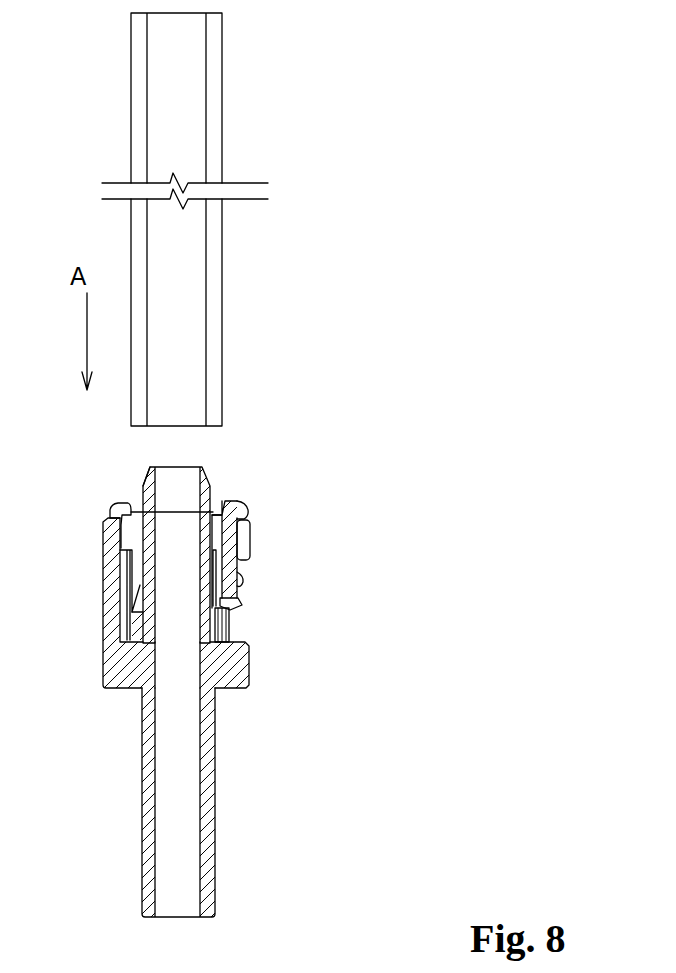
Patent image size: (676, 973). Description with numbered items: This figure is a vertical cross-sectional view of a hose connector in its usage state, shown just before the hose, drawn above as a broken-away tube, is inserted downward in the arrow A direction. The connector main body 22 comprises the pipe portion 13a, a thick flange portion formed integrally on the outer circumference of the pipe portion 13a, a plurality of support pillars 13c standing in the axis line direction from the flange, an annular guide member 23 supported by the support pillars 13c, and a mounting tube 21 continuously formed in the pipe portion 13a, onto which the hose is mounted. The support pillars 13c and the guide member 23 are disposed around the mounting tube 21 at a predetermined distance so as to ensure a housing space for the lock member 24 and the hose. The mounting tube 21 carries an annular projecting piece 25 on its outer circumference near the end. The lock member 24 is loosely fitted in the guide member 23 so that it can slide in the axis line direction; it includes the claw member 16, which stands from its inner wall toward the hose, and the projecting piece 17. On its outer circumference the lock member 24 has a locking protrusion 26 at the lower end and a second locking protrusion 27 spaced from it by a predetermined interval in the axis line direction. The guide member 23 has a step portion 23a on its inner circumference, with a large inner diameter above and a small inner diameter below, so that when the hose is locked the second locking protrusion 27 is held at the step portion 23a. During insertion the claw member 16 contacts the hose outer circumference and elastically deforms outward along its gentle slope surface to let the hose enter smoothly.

The pipe portion 13a is at (210, 822).
The support pillars 13c is at (112, 585).
The claw member 16 is at (235, 591).
The projecting piece 17 is at (219, 507).
The mounting tube 21 is at (187, 475).
The connector main body 22 is at (84, 666).
The guide member 23 is at (242, 548).
The step portion 23a is at (240, 512).
The lock member 24 is at (110, 518).
The annular projecting piece 25 is at (144, 486).
The locking protrusion 26 is at (238, 604).
The second locking protrusion 27 is at (239, 576).